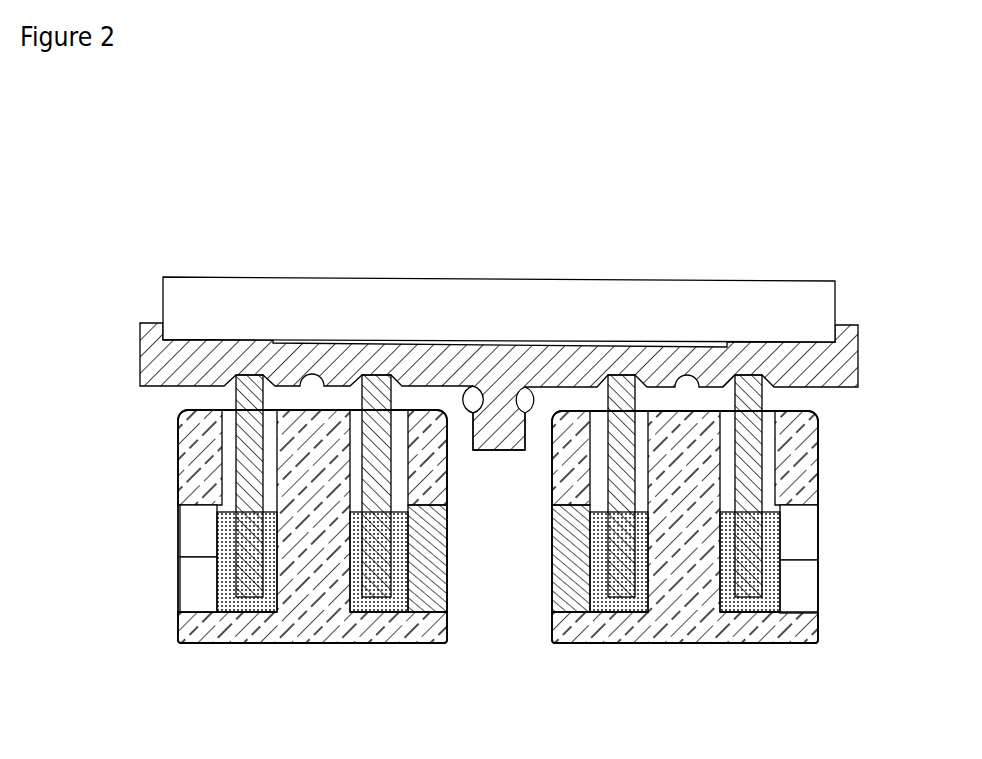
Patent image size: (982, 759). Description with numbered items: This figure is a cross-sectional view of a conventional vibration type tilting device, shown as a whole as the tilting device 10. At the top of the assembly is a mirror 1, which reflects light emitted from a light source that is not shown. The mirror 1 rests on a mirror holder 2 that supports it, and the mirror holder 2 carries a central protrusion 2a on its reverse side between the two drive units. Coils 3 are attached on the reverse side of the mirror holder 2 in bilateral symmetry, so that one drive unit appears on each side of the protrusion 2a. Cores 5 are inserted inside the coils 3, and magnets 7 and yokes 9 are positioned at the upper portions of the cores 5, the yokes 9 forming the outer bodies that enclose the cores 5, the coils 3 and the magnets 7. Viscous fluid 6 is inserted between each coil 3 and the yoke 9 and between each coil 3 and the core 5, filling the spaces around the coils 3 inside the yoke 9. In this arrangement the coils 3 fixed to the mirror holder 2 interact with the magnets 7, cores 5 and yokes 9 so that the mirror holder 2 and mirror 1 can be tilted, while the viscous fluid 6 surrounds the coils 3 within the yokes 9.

The mirror 1 is at (277, 285).
The mirror holder 2 is at (150, 357).
The central protrusion of base plate 2a is at (498, 448).
The coil 3 is at (248, 567).
The core 5 is at (308, 582).
The viscous fluid 6 is at (397, 590).
The magnet 7 is at (819, 522).
The yoke 9 is at (810, 447).
The actuator assembly 10 is at (806, 192).